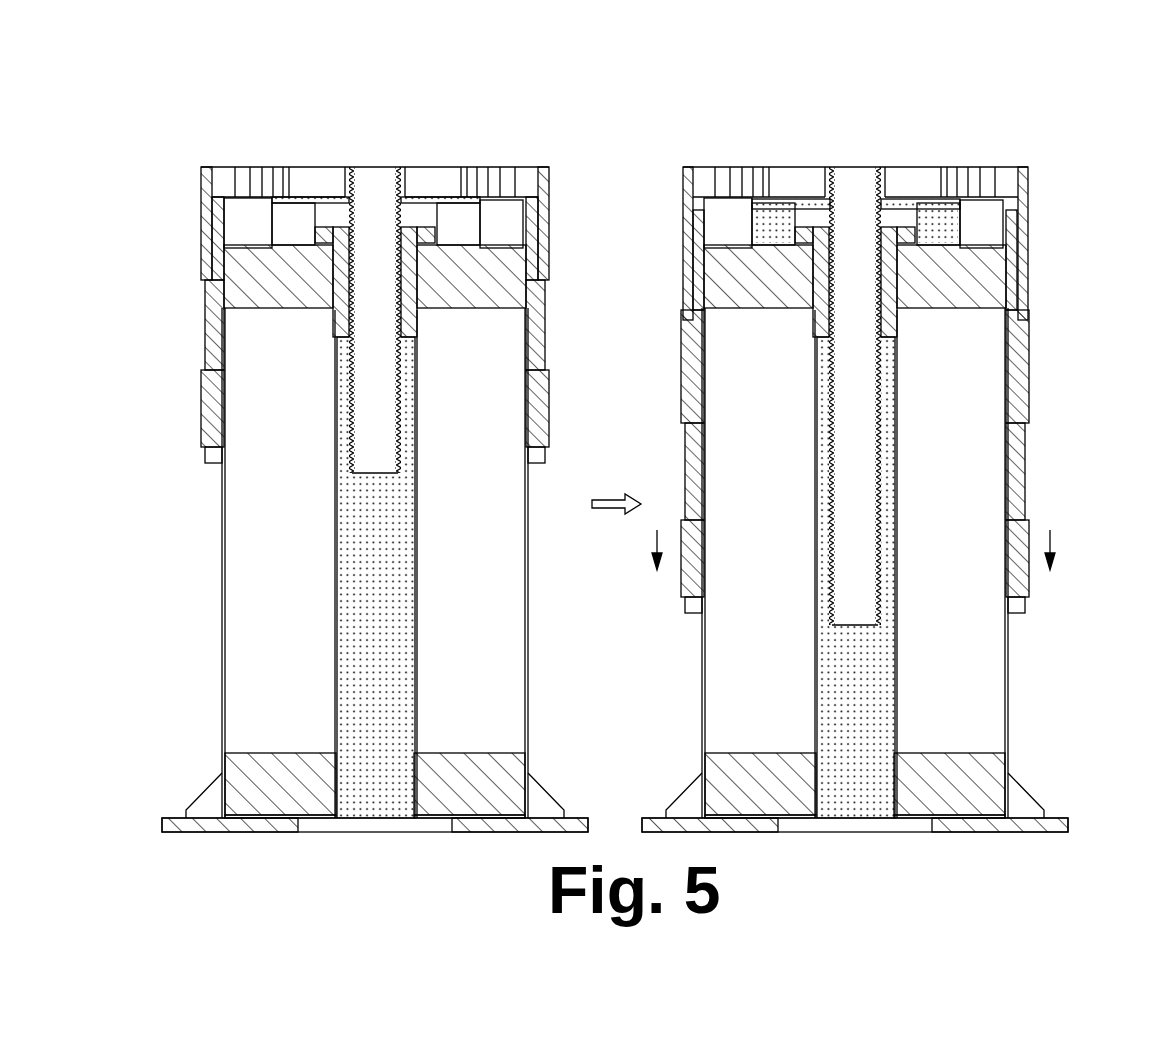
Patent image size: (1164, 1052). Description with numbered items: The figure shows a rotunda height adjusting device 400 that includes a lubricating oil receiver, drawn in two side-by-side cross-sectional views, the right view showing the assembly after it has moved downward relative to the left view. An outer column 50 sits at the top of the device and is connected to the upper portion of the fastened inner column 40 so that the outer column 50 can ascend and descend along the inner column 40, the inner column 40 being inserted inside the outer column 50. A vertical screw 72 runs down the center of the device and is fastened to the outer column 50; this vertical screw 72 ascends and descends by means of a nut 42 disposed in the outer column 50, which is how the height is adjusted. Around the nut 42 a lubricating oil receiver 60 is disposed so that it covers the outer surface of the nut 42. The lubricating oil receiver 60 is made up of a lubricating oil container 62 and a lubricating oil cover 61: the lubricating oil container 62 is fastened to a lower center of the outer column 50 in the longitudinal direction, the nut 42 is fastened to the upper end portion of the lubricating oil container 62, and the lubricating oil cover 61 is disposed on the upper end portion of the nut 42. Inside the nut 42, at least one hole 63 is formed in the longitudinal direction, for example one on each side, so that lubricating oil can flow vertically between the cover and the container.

The dispensing container assembly 400 is at (403, 71).
The inner column 40 is at (272, 580).
The nut 42 is at (317, 230).
The outer column 50 is at (228, 183).
The lubricating oil receiver 60 is at (597, 207).
The lubricating oil cover 61 is at (468, 222).
The lubricating oil container 62 is at (410, 462).
The hole 63 is at (330, 232).
The vertical screw 72 is at (375, 217).